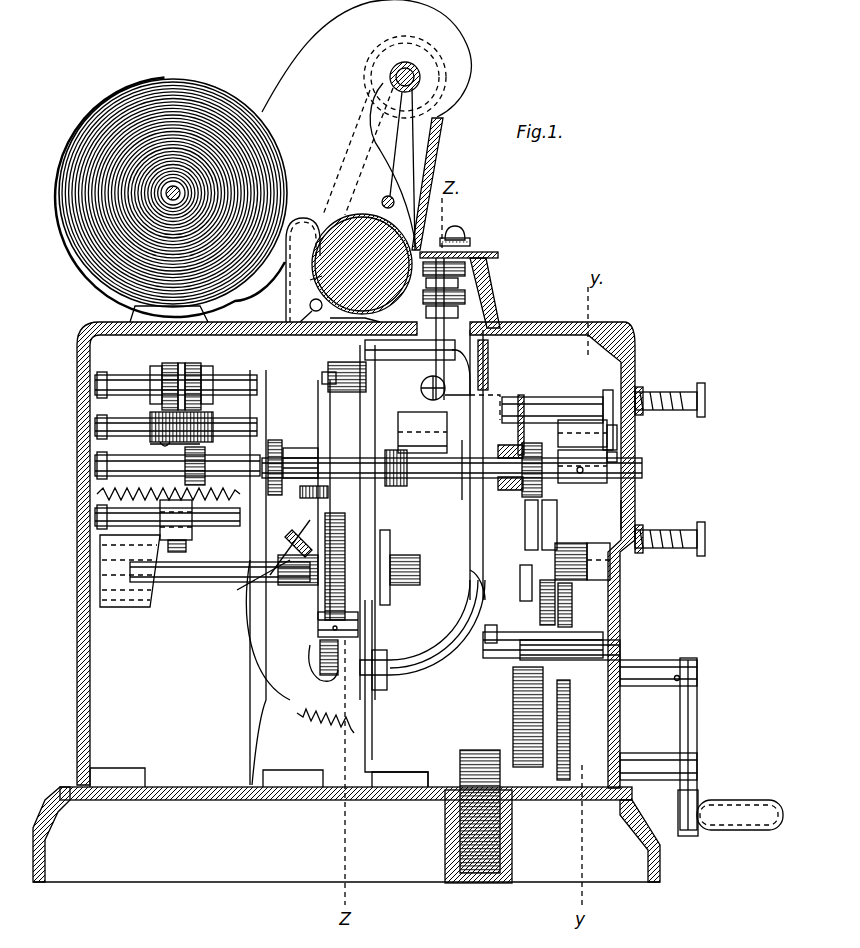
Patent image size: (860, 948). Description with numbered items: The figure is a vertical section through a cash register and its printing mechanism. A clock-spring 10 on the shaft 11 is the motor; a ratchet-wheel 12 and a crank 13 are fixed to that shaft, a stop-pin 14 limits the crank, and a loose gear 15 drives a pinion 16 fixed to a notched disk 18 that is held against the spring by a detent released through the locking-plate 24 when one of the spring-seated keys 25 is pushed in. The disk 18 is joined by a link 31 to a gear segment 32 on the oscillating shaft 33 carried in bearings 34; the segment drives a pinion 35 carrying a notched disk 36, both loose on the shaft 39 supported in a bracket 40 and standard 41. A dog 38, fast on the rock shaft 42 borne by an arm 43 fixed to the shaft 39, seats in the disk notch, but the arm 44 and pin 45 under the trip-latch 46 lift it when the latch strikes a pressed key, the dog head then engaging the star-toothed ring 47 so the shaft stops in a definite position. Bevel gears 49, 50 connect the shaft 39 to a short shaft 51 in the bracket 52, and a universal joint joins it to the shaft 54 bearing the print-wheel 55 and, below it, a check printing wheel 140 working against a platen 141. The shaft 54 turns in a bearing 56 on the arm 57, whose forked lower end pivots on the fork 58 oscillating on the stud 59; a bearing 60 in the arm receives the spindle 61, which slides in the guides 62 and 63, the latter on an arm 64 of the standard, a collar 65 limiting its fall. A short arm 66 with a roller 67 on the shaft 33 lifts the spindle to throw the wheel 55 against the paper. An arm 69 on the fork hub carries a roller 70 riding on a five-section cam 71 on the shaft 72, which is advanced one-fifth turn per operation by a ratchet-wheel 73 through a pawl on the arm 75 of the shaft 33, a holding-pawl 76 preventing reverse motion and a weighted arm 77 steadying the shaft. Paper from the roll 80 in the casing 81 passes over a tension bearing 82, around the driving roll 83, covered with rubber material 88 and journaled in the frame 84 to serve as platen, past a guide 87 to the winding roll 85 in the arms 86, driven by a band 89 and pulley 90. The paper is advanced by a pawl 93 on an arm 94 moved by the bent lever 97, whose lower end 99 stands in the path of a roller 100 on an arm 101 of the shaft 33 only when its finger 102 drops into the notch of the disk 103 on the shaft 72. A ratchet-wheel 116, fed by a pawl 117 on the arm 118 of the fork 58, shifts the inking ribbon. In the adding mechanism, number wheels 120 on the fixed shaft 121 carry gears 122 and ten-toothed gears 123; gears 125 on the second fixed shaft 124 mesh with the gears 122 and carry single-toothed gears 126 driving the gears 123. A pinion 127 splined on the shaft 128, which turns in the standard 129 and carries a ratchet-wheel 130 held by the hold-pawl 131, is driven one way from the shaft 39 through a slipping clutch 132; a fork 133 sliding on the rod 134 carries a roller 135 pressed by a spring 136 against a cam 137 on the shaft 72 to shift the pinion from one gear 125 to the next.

The clock-spring 10 is at (528, 720).
The shaft 11 is at (698, 680).
The ratchet-wheel 12 is at (572, 728).
The crank 13 is at (697, 724).
The stop-pin 14 is at (640, 760).
The gear 15 is at (572, 612).
The pinion 16 is at (580, 548).
The disk 18 is at (540, 598).
The locking-plate 24 is at (635, 512).
The keys 25 is at (700, 523).
The link 31 is at (535, 568).
The gear segment 32 is at (527, 525).
The shaft 33 is at (498, 660).
The bearings 34 is at (592, 645).
The pinion 35 is at (530, 500).
The disk 36 is at (571, 545).
The dog 38 is at (560, 422).
The shaft 39 is at (452, 482).
The bracket 40 is at (552, 400).
The standard 41 is at (366, 728).
The rock shaft 42 is at (540, 434).
The arm 43 is at (612, 464).
The arm 44 is at (617, 432).
The pin 45 is at (617, 450).
The trip-latch 46 is at (605, 412).
The star-toothed ring 47 is at (545, 415).
The bevel gear 49 is at (403, 487).
The bevel gear 50 is at (420, 470).
The short shaft 51 is at (443, 396).
The bracket 52 is at (422, 432).
The shaft 54 is at (452, 314).
The print-wheel 55 is at (470, 250).
The bearing 56 is at (490, 265).
The arm 57 is at (494, 330).
The fork 58 is at (377, 522).
The stud 59 is at (330, 380).
The bearing 60 is at (472, 386).
The spindle 61 is at (470, 546).
The guide 62 is at (507, 391).
The guide 63 is at (437, 627).
The arm 64 is at (434, 624).
The collar 65 is at (461, 578).
The short arm 66 is at (502, 627).
The roller 67 is at (400, 655).
The arm 69 is at (298, 581).
The roller 70 is at (270, 630).
The cam 71 is at (330, 595).
The shaft 72 is at (220, 583).
The ratchet-wheel 73 is at (388, 547).
The arm 75 is at (400, 690).
The holding-pawl 76 is at (405, 595).
The weighted arm 77 is at (484, 728).
The roll of paper 80 is at (200, 145).
The casing 81 is at (95, 283).
The bearing 82 is at (298, 238).
The driving roll 83 is at (301, 283).
The frame 84 is at (327, 108).
The winding roll 85 is at (398, 66).
The arms 86 is at (456, 40).
The guide 87 is at (392, 194).
The covering material 88 is at (350, 214).
The band 89 is at (434, 155).
The pulley 90 is at (393, 166).
The pawl 93 is at (310, 305).
The arm 94 is at (337, 500).
The bent lever 97 is at (294, 545).
The lower end 99 is at (298, 714).
The roller 100 is at (310, 663).
The arm 101 is at (336, 666).
The finger 102 is at (255, 588).
The disk 103 is at (322, 620).
The ratchet-wheel 116 is at (490, 352).
The pawl 117 is at (372, 348).
The arm 118 is at (345, 358).
The number wheels 120 is at (215, 372).
The fixed shaft 121 is at (96, 382).
The gear 122 is at (218, 362).
The ten-toothed gear 123 is at (186, 362).
The second fixed shaft 124 is at (96, 427).
The gears 125 is at (212, 420).
The single-toothed gears 126 is at (150, 443).
The pinion 127 is at (190, 468).
The shaft 128 is at (96, 465).
The standard 129 is at (252, 700).
The ratchet-wheel 130 is at (275, 450).
The hold-pawl 131 is at (308, 498).
The slipping clutch 132 is at (292, 450).
The fork 133 is at (186, 527).
The rod 134 is at (96, 522).
The roller 135 is at (180, 542).
The spring 136 is at (96, 492).
The cam 137 is at (136, 578).
The check printing wheel 140 is at (460, 283).
The platen 141 is at (348, 315).